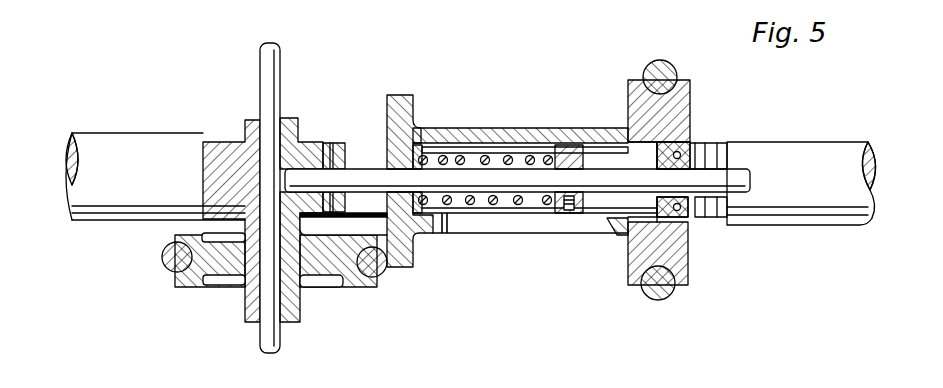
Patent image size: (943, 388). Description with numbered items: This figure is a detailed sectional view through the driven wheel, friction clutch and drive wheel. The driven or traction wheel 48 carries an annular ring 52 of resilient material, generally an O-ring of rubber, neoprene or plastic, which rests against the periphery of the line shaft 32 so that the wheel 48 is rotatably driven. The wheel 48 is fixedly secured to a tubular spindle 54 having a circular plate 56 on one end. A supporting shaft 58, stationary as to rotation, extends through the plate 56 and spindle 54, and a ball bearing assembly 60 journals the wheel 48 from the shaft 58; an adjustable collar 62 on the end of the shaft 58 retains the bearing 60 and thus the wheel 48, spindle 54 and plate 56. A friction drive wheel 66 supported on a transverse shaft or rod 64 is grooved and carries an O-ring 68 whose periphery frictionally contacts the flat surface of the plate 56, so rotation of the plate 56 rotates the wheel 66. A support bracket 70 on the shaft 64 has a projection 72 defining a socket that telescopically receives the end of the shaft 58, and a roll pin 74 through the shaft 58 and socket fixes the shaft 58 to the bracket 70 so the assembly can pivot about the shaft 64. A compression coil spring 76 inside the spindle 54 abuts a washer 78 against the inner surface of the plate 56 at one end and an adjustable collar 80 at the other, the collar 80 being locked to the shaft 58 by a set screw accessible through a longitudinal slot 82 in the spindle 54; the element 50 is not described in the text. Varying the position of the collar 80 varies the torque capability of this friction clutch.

The line shaft 32 is at (826, 215).
The driven wheel 48 is at (668, 108).
The housing end wall 50 is at (660, 260).
The annular ring 52 is at (668, 290).
The tubular spindle 54 is at (510, 140).
The circular plate 56 is at (398, 110).
The supporting shaft 58 is at (365, 170).
The ball bearing assembly 60 is at (683, 152).
The adjustable collar 62 is at (740, 153).
The transverse shaft 64 is at (272, 334).
The friction drive wheel 66 is at (333, 267).
The O-ring 68 is at (387, 273).
The support bracket 70 is at (235, 158).
The projection 72 is at (340, 146).
The roll pin 74 is at (327, 162).
The compression coil spring 76 is at (462, 157).
The washer 78 is at (423, 145).
The adjustable collar 80 is at (582, 142).
The longitudinal slot 82 is at (607, 222).